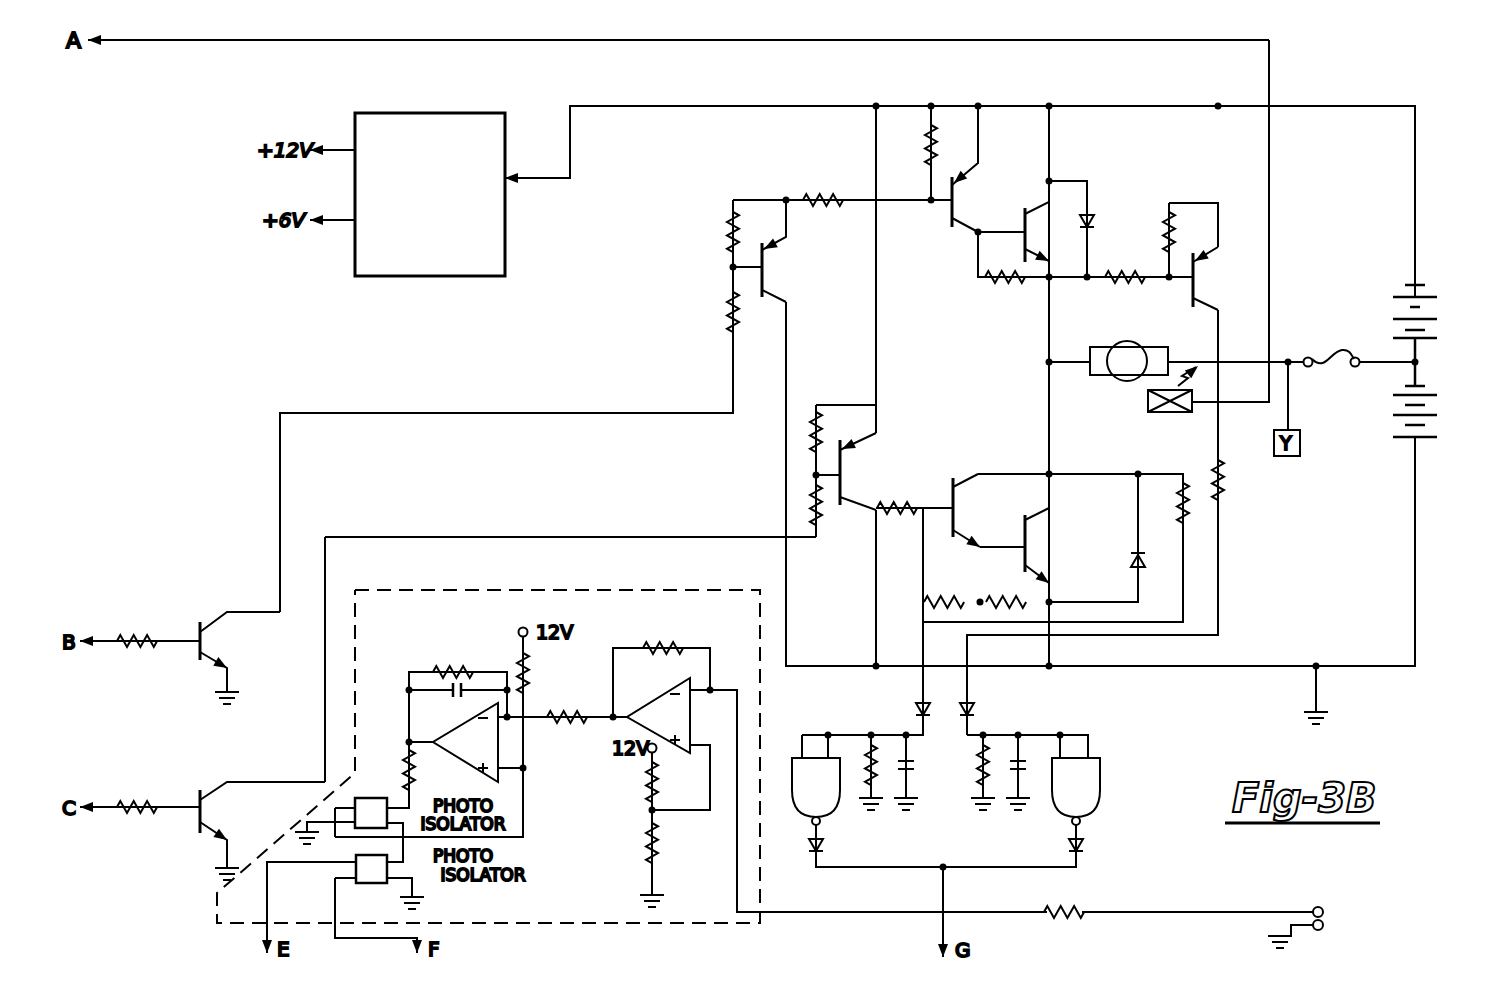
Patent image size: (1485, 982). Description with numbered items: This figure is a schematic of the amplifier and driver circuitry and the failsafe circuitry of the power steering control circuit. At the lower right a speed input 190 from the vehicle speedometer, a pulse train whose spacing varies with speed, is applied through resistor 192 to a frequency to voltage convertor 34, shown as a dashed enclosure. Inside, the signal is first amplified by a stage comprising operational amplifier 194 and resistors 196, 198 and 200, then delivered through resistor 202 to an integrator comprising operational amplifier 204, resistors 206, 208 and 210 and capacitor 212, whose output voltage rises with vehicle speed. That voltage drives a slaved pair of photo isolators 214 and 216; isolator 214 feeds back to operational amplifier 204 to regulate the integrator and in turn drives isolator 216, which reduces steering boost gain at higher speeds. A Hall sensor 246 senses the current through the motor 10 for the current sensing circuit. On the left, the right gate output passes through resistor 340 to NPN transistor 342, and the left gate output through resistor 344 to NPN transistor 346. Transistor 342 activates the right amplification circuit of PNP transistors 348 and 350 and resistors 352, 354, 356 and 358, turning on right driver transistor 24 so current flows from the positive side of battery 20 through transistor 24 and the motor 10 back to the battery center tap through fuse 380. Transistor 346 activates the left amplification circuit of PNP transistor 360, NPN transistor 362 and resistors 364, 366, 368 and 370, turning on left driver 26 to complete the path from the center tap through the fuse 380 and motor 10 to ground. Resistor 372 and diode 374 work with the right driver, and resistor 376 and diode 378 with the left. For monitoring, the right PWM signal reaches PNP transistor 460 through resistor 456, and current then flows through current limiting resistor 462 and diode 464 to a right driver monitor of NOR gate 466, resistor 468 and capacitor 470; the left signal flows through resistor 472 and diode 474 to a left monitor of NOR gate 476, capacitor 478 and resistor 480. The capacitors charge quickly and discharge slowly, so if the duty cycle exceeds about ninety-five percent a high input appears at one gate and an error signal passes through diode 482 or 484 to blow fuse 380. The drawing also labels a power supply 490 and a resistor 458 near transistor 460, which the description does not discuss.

The motor 10 is at (1093, 347).
The battery 20 is at (1392, 268).
The right driver transistor 24 is at (1028, 236).
The left driver transistor 26 is at (1030, 548).
The frequency to voltage convertor 34 is at (466, 590).
The speed input 190 is at (1328, 902).
The resistor 192 is at (1076, 910).
The operational amplifier 194 is at (672, 690).
The resistor 196 is at (670, 645).
The resistor 198 is at (648, 782).
The resistor 200 is at (648, 840).
The resistor 202 is at (605, 690).
The operational amplifier 204 is at (470, 758).
The resistor 206 is at (448, 668).
The resistor 208 is at (405, 764).
The resistor 210 is at (532, 680).
The capacitor 212 is at (456, 698).
The photo isolator 214 is at (390, 788).
The photo isolator 216 is at (353, 884).
The Hall sensor 246 is at (1148, 401).
The resistor 340 is at (165, 600).
The NPN transistor 342 is at (205, 650).
The resistor 344 is at (140, 802).
The NPN transistor 346 is at (205, 817).
The PNP transistor 348 is at (768, 282).
The PNP transistor 350 is at (957, 192).
The resistor 352 is at (728, 305).
The resistor 354 is at (728, 226).
The resistor 356 is at (840, 184).
The resistor 358 is at (928, 130).
The PNP transistor 360 is at (845, 478).
The NPN transistor 362 is at (958, 504).
The resistor 364 is at (822, 518).
The resistor 366 is at (804, 408).
The resistor 368 is at (912, 503).
The resistor 370 is at (965, 572).
The resistor 372 is at (1008, 285).
The diode 374 is at (1092, 213).
The resistor 376 is at (1022, 580).
The diode 378 is at (1132, 562).
The fuse 380 is at (1330, 375).
The resistor 456 is at (1135, 265).
The resistor 458 is at (1164, 237).
The PNP transistor 460 is at (1198, 286).
The current limiting resistor 462 is at (1224, 490).
The diode 464 is at (975, 712).
The NOR gate 466 is at (1103, 776).
The resistor 468 is at (982, 775).
The capacitor 470 is at (1032, 770).
The current limiting resistor 472 is at (1189, 508).
The diode 474 is at (916, 710).
The NOR gate 476 is at (803, 805).
The capacitor 478 is at (914, 765).
The resistor 480 is at (877, 772).
The diode 482 is at (1084, 848).
The diode 484 is at (824, 848).
The power supply 490 is at (505, 258).